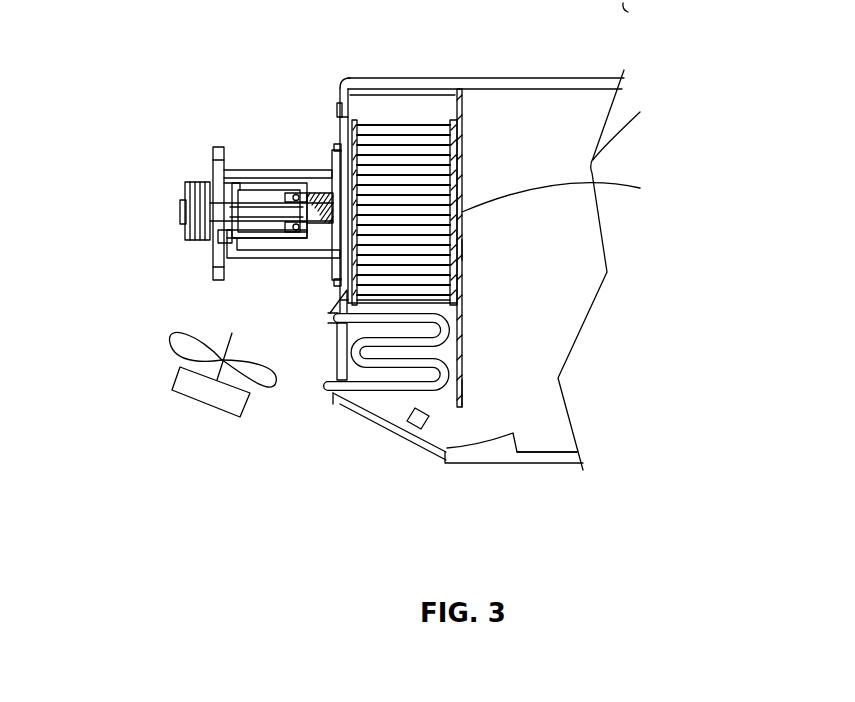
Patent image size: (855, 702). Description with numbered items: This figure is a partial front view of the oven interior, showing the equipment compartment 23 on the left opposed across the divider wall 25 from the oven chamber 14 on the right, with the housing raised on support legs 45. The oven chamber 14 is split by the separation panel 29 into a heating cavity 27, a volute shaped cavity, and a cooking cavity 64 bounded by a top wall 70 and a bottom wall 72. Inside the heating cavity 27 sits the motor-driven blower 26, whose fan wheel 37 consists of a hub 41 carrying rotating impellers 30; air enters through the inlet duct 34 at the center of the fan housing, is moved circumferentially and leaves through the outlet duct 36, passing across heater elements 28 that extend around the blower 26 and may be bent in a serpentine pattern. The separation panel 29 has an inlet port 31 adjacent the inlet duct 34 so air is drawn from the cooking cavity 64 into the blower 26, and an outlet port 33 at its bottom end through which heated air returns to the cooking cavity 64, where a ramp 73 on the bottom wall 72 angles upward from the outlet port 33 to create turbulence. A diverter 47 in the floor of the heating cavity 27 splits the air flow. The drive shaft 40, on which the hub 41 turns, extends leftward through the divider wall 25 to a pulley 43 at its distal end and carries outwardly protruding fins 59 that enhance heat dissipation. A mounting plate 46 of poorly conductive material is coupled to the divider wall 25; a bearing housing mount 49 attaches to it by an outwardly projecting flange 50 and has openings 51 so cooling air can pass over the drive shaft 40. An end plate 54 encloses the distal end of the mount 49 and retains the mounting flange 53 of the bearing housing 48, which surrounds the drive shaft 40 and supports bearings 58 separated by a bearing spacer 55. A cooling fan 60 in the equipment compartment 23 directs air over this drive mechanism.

The oven chamber 14 is at (555, 110).
The equipment compartment 23 is at (141, 87).
The divider wall 25 is at (336, 370).
The motor-driven blower 26 is at (400, 165).
The heating cavity 27 is at (434, 98).
The heater elements 28 is at (383, 427).
The separation panel 29 is at (462, 346).
The rotating impellers 30 is at (370, 145).
The inlet port 31 is at (480, 226).
The outlet port 33 is at (456, 436).
The inlet duct 34 is at (640, 188).
The outlet duct 36 is at (457, 322).
The fan wheel 37 is at (400, 165).
The drive shaft 40 is at (272, 178).
The hub 41 is at (335, 298).
The pulley 43 is at (195, 185).
The support legs 45 is at (647, 16).
The mounting plate 46 is at (335, 285).
The diverter 47 is at (432, 452).
The bearing housing 48 is at (247, 170).
The bearing housing mount 49 is at (238, 258).
The outwardly projecting flange 50 is at (338, 105).
The openings 51 is at (294, 172).
The mounting flange 53 is at (218, 254).
The end plate 54 is at (218, 249).
The bearing spacer 55 is at (262, 235).
The bearings 58 is at (220, 165).
The outwardly protruding fins 59 is at (330, 180).
The cooling fan 60 is at (210, 395).
The cooking cavity 64 is at (568, 146).
The top wall 70 is at (533, 82).
The bottom wall 72 is at (570, 473).
The ramp 73 is at (500, 453).